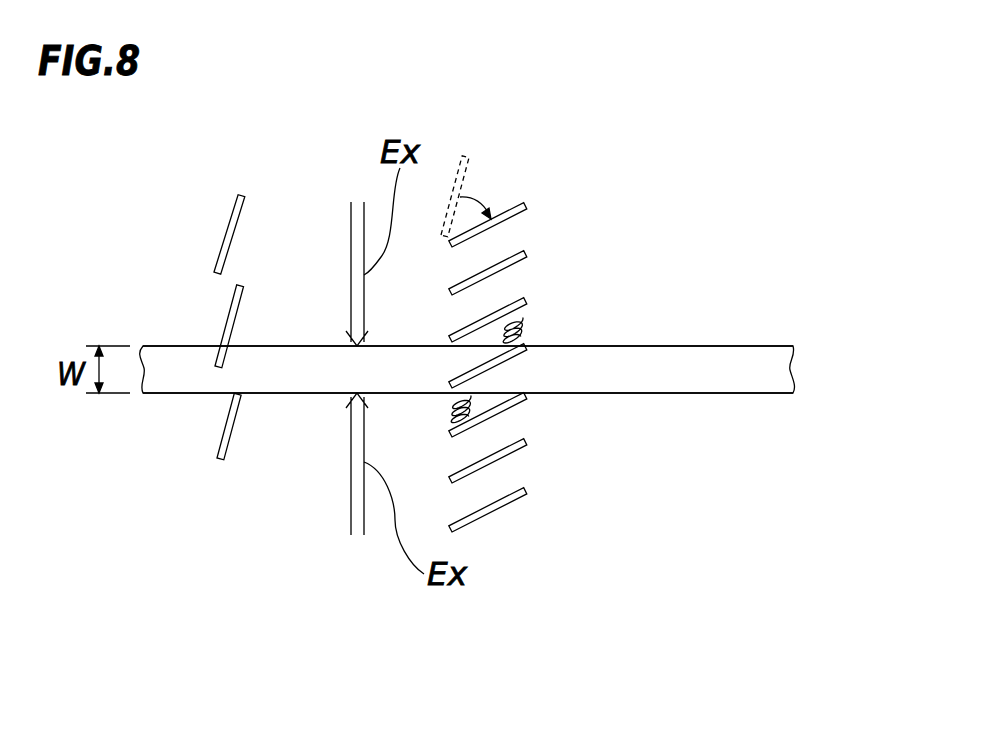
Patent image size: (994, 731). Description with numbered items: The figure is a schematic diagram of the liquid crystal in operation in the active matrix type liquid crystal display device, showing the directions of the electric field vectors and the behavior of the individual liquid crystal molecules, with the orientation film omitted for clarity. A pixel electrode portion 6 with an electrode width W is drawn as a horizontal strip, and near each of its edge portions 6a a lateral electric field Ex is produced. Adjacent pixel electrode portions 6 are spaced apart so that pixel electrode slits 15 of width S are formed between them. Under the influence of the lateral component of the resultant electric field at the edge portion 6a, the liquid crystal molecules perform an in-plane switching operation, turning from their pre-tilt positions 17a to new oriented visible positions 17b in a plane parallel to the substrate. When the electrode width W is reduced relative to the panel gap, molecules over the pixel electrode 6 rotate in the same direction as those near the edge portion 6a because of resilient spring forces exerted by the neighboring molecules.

The pixel electrode portion 6 is at (777, 368).
The edge portion 6a is at (694, 346).
The pixel electrode slit 15 is at (545, 280).
The pre-tilt position 17a is at (222, 242).
The oriented visible position 17b is at (531, 210).